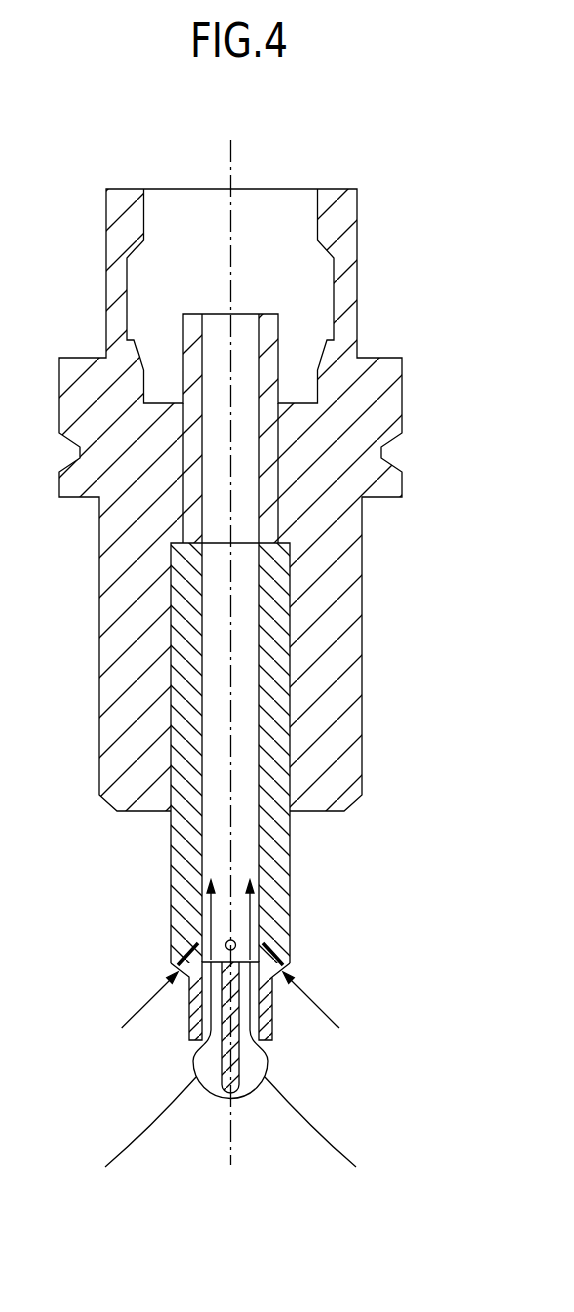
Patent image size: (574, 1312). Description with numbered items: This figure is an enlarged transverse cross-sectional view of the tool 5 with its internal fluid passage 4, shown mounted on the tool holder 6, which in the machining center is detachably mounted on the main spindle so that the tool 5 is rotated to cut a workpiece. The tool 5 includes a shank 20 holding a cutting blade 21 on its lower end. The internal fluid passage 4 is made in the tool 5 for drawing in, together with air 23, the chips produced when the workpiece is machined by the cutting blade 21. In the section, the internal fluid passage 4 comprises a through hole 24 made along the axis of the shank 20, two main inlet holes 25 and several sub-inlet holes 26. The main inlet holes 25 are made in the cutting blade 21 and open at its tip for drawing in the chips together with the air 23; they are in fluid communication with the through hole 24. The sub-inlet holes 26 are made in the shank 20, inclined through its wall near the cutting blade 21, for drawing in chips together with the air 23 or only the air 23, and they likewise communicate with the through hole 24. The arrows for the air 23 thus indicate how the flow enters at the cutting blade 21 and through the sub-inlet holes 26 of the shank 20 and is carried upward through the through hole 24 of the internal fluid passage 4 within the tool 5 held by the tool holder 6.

The internal fluid passage 4 is at (243, 838).
The tool 5 is at (291, 883).
The tool holder 6 is at (362, 636).
The shank 20 is at (290, 915).
The cutting blade 21 is at (268, 1058).
The air 23 is at (137, 1012).
The through hole 24 is at (257, 750).
The main inlet hole 25 is at (207, 1082).
The sub-inlet hole 26 is at (226, 941).